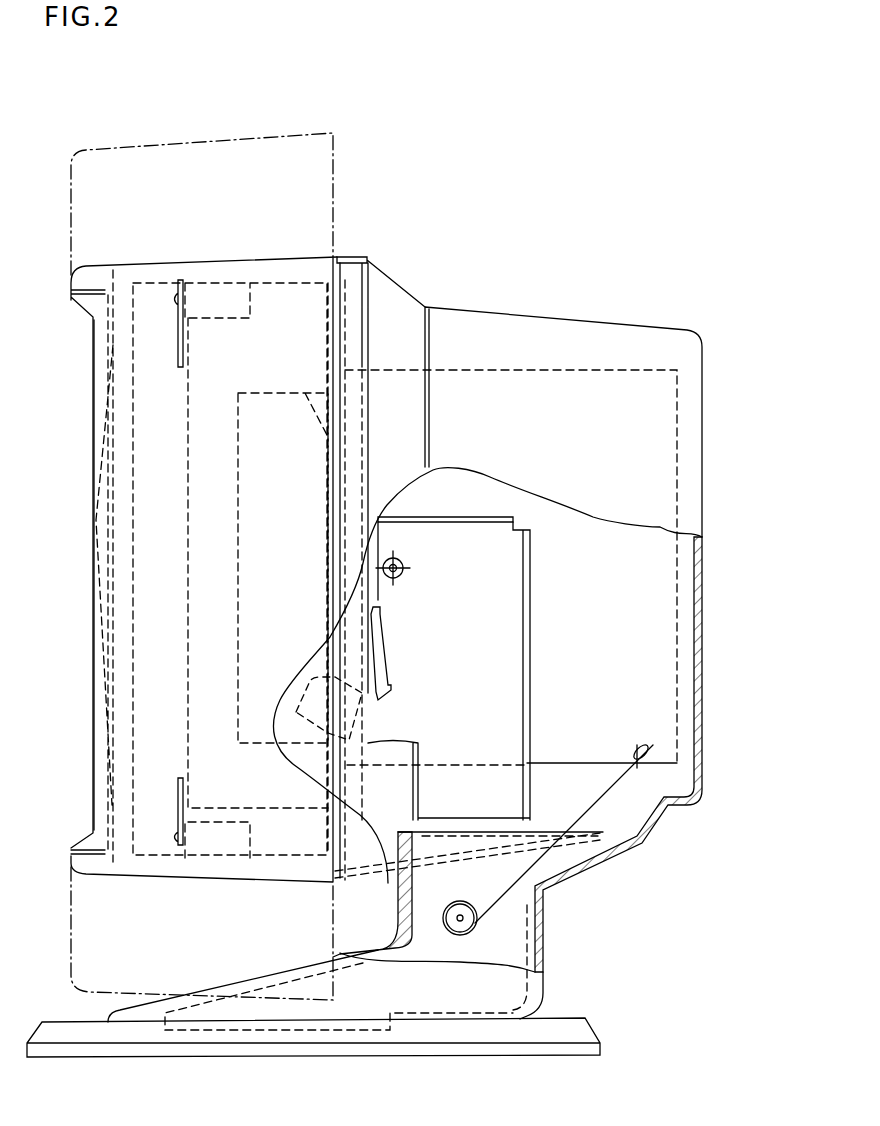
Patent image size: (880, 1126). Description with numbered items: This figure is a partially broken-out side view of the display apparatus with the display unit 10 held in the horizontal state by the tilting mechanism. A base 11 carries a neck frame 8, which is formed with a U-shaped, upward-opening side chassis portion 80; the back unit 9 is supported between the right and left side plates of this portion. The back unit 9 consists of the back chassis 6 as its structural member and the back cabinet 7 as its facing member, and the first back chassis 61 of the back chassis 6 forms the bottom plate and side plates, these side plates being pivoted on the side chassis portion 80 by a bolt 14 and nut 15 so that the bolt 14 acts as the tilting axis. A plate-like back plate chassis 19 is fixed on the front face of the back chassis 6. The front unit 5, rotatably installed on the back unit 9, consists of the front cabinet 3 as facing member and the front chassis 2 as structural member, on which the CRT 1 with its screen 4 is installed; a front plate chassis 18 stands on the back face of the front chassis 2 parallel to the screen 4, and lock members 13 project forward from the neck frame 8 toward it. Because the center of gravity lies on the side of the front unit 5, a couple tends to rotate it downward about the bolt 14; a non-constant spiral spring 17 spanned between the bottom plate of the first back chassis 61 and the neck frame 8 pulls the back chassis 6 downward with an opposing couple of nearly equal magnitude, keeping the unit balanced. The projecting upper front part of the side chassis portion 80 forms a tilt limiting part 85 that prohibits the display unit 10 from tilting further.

The CRT 1 is at (288, 410).
The front chassis 2 is at (267, 290).
The front cabinet 3 is at (137, 268).
The screen 4 is at (95, 530).
The front unit 5 is at (216, 125).
The back chassis 6 is at (684, 693).
The back cabinet 7 is at (628, 340).
The neck frame 8 is at (550, 603).
The back unit 9 is at (553, 300).
The display unit 10 is at (550, 173).
The base 11 is at (585, 1040).
The lock members 13 is at (392, 735).
The bolt 14 is at (404, 562).
The nut 15 is at (402, 582).
The non-constant spiral spring 17 is at (497, 924).
The front plate chassis 18 is at (330, 285).
The back plate chassis 19 is at (343, 293).
The first back chassis 61 is at (653, 745).
The side chassis portion 80 is at (478, 553).
The tilt limiting part 85 is at (380, 536).